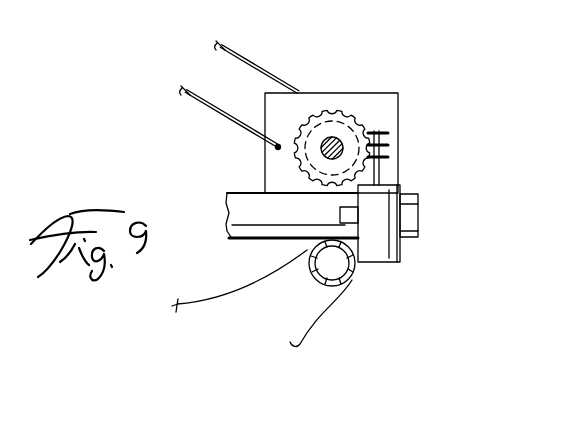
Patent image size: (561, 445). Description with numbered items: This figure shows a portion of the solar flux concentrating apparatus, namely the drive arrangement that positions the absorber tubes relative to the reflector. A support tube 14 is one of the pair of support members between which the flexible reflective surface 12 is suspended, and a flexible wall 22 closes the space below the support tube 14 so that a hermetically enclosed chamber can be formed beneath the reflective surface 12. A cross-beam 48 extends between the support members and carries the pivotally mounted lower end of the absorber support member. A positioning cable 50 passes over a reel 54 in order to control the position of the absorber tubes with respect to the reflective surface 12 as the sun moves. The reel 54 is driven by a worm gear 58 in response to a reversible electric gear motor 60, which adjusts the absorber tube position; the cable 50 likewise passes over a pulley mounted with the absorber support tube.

The flexible reflective surface 12 is at (213, 297).
The support tube 14 is at (352, 278).
The flexible wall 22 is at (308, 327).
The cross-beam 48 is at (245, 195).
The positioning cable 50 is at (247, 68).
The reel 54 is at (332, 140).
The worm gear 58 is at (388, 140).
The reversible electric gear motor 60 is at (388, 263).